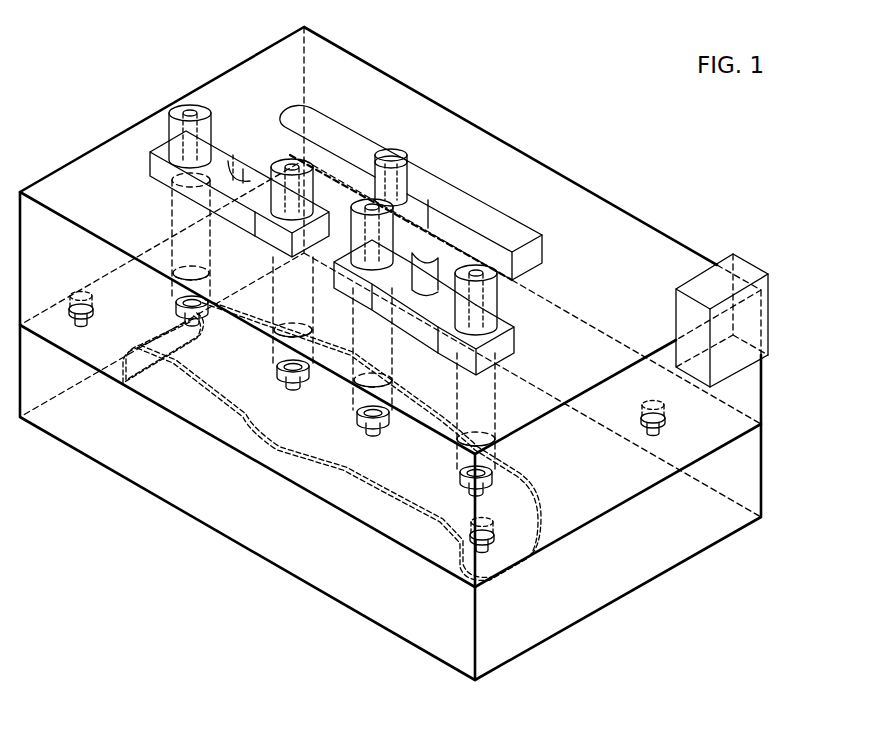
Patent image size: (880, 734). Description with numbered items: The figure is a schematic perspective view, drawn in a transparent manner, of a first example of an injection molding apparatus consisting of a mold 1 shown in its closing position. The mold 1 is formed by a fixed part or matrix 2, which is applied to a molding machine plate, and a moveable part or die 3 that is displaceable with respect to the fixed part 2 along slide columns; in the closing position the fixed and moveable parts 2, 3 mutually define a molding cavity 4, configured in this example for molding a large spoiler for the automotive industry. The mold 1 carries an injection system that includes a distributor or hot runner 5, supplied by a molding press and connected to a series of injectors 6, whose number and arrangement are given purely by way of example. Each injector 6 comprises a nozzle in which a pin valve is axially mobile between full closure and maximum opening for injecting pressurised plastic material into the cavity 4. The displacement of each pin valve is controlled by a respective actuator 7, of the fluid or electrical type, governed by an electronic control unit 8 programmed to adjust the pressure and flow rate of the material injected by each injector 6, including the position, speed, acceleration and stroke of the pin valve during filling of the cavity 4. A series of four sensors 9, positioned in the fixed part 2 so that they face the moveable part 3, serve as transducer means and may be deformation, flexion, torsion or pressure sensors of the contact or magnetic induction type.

The mold 1 is at (808, 251).
The fixed part or matrix 2 is at (592, 207).
The moveable part or die 3 is at (65, 430).
The molding cavity 4 is at (371, 483).
The distributor or hot runner 5 is at (330, 153).
The injector 6 is at (280, 293).
The actuator 7 is at (270, 188).
The electronic control unit 8 is at (750, 258).
The sensor 9 is at (92, 311).